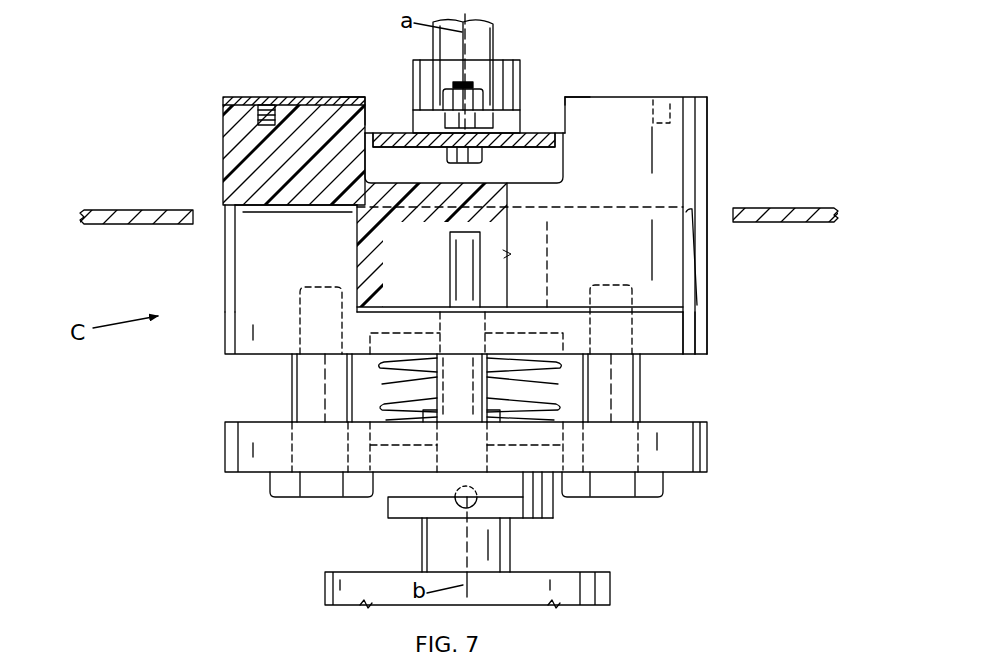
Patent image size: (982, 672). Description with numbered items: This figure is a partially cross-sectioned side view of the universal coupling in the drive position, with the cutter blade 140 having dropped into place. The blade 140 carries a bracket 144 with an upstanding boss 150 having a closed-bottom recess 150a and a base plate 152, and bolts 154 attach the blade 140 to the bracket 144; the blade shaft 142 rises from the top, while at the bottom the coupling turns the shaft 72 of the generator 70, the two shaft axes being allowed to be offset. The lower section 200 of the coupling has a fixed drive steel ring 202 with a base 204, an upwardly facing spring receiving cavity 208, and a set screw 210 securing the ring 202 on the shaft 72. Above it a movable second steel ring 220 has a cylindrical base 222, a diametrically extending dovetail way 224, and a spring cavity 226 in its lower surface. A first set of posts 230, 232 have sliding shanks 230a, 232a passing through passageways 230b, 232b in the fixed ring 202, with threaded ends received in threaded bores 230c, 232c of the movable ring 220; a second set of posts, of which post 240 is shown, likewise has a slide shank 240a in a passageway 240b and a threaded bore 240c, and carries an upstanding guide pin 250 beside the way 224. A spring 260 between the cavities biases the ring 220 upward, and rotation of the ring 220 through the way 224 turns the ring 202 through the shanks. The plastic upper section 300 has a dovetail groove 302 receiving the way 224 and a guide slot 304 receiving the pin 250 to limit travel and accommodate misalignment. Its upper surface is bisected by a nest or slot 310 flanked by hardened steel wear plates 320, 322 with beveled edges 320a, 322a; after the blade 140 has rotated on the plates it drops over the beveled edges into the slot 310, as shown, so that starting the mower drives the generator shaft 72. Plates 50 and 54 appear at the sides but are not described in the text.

The support plate 50 is at (803, 223).
The mounting plate 54 is at (727, 210).
The generator 70 is at (613, 588).
The generator shaft 72 is at (510, 555).
The blade 140 is at (553, 138).
The blade shaft 142 is at (498, 33).
The bracket 144 is at (521, 62).
The upstanding boss 150 is at (416, 68).
The recess 150a is at (484, 132).
The base plate 152 is at (417, 118).
The bolts 154 is at (447, 155).
The lower section 200 is at (735, 372).
The drive steel ring 202 is at (222, 438).
The base 204 is at (537, 510).
The spring receiving cavity 208 is at (367, 480).
The set screw 210 is at (460, 505).
The second steel ring 220 is at (222, 336).
The cylindrical base 222 is at (708, 338).
The dovetail way 224 is at (257, 252).
The spring cavity 226 is at (547, 316).
The post 230 is at (655, 499).
The sliding shank 230a is at (642, 407).
The passageway 230b is at (636, 450).
The threaded bore 230c is at (632, 330).
The post 232 is at (290, 400).
The sliding shank 232a is at (305, 378).
The passageway 232b is at (296, 441).
The threaded bore 232c is at (340, 328).
The post 240 is at (421, 498).
The slide shank 240a is at (493, 405).
The passageway 240b is at (488, 448).
The threaded bore 240c is at (487, 310).
The guide pin 250 is at (462, 270).
The spring 260 is at (553, 385).
The upper section 300 is at (717, 135).
The dovetail groove 302 is at (273, 208).
The guide slot 304 is at (500, 242).
The slot 310 is at (555, 155).
The wear plate 320 is at (705, 96).
The beveled edge 320a is at (570, 97).
The wear plate 322 is at (237, 96).
The beveled edge 322a is at (364, 96).